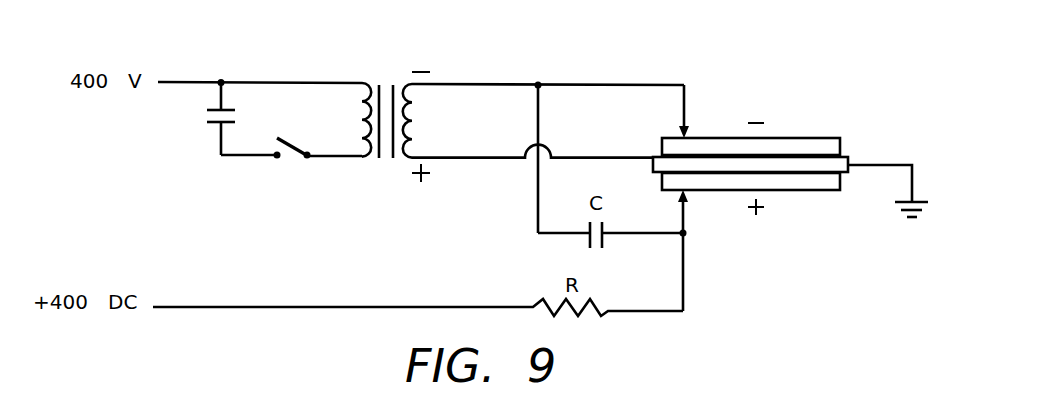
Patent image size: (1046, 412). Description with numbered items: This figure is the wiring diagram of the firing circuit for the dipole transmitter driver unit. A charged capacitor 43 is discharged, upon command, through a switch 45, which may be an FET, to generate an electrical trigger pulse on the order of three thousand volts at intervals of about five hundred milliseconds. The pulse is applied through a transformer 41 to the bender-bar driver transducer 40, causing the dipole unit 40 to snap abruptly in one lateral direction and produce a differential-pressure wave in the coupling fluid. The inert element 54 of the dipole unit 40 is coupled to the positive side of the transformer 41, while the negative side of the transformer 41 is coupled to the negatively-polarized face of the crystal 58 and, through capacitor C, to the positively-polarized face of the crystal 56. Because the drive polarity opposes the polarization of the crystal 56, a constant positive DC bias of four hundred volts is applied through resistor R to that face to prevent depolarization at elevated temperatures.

The bender-bar driver transducer 40 is at (758, 168).
The transformer 41 is at (375, 46).
The capacitor 43 is at (208, 122).
The switch 45 is at (287, 137).
The inert element 54 is at (656, 153).
The crystal 56 is at (812, 190).
The crystal 58 is at (812, 138).